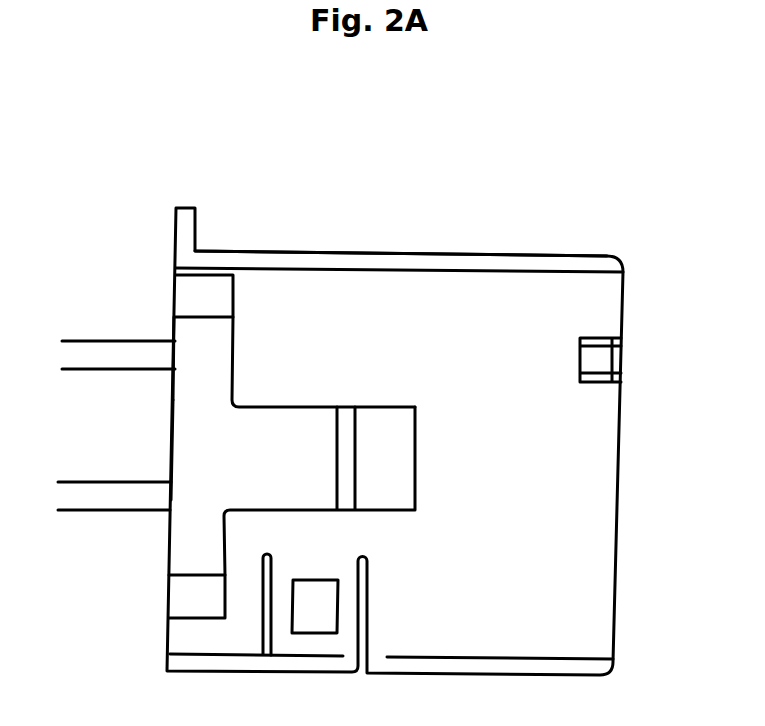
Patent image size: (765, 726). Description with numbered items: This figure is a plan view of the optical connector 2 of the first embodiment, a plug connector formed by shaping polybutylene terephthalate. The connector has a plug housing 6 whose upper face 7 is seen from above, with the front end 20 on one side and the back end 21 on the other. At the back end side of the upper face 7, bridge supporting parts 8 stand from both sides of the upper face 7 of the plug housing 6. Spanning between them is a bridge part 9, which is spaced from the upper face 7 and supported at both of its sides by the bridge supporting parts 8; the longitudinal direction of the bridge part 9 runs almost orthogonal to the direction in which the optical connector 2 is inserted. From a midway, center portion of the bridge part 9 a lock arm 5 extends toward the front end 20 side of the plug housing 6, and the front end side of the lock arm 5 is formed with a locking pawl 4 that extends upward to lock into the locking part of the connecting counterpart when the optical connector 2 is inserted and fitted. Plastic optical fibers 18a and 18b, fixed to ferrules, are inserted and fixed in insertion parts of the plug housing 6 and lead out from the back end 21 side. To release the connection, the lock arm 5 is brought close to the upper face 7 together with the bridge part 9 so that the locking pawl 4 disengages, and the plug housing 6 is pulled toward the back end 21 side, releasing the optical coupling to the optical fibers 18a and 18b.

The optical connector 2 is at (622, 208).
The locking pawl 4 is at (385, 422).
The lock arm 5 is at (280, 435).
The plug housing 6 is at (507, 300).
The upper face 7 is at (422, 323).
The bridge supporting parts 8 is at (185, 302).
The bridge part 9 is at (190, 377).
The optical fiber 18a is at (87, 348).
The optical fiber 18b is at (73, 497).
The front end 20 is at (613, 597).
The back end 21 is at (172, 430).